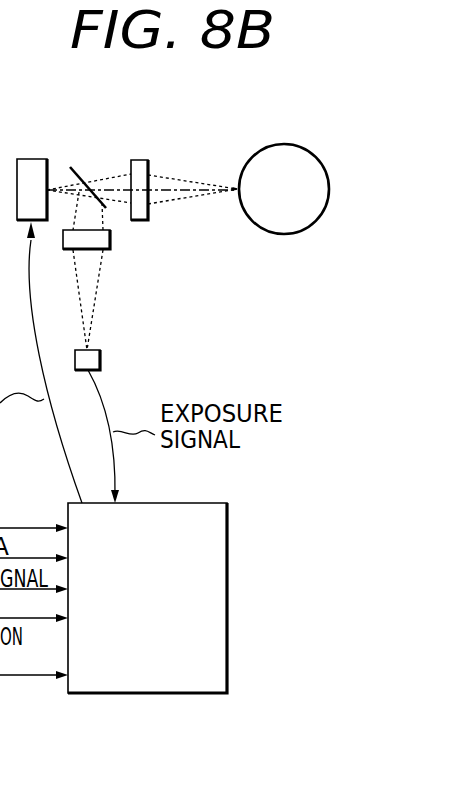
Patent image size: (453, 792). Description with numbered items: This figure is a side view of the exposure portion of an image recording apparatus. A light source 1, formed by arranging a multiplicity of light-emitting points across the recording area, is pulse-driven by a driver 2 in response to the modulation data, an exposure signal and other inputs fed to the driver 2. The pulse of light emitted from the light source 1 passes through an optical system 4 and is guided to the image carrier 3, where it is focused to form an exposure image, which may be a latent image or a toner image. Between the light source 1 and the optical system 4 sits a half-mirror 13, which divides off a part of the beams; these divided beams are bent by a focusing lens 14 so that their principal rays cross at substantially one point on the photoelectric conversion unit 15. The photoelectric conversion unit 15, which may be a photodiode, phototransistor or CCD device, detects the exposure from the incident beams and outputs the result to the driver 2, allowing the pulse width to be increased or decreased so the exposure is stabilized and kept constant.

The light source 1 is at (33, 159).
The driver 2 is at (170, 503).
The image carrier 3 is at (287, 145).
The optical system 4 is at (140, 160).
The half-mirror 13 is at (79, 171).
The focusing lens 14 is at (110, 240).
The photoelectric conversion unit 15 is at (100, 357).